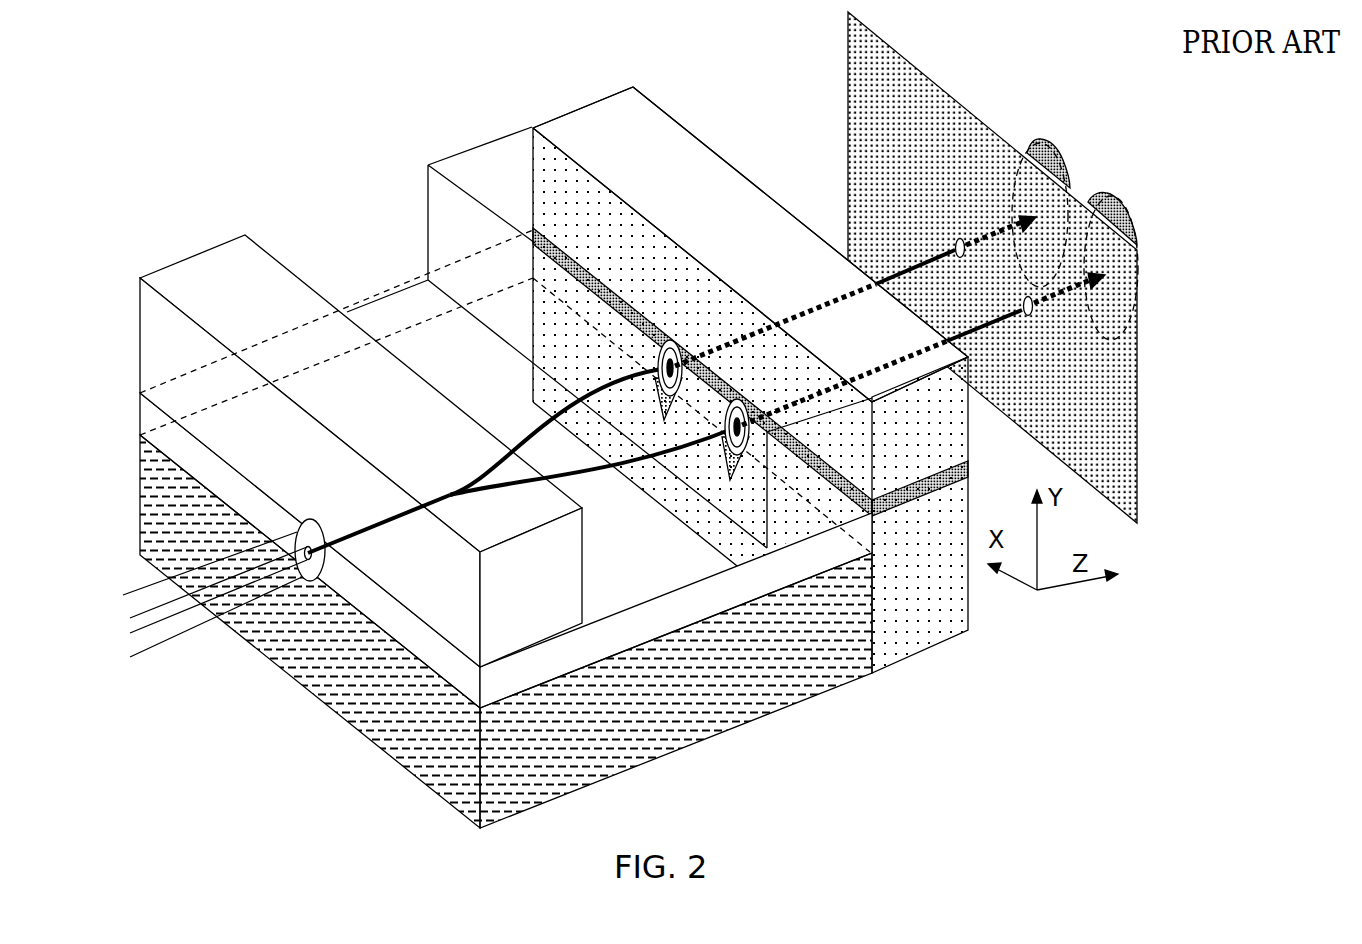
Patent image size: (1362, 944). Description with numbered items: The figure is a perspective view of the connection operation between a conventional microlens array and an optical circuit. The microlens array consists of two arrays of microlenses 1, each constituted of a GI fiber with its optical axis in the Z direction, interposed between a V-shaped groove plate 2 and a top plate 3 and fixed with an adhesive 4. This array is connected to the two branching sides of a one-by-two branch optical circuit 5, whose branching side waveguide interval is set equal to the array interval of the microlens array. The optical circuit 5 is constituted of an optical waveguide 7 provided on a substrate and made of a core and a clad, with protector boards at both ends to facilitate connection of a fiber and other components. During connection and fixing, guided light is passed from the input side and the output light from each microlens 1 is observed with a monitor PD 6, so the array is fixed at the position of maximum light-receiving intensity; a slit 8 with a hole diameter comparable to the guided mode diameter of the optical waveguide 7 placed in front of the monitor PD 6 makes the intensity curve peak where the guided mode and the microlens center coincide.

The microlens 1 is at (672, 337).
The V-shaped groove plate 2 is at (922, 607).
The top plate 3 is at (708, 192).
The adhesive 4 is at (535, 228).
The 1×2 branch optical circuit 5 is at (403, 290).
The monitor PD 6 is at (1053, 143).
The optical waveguide 7 is at (447, 495).
The slit 8 is at (1115, 448).